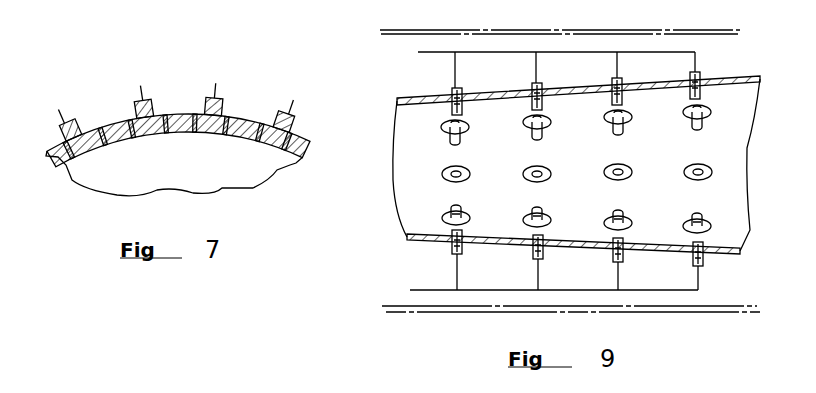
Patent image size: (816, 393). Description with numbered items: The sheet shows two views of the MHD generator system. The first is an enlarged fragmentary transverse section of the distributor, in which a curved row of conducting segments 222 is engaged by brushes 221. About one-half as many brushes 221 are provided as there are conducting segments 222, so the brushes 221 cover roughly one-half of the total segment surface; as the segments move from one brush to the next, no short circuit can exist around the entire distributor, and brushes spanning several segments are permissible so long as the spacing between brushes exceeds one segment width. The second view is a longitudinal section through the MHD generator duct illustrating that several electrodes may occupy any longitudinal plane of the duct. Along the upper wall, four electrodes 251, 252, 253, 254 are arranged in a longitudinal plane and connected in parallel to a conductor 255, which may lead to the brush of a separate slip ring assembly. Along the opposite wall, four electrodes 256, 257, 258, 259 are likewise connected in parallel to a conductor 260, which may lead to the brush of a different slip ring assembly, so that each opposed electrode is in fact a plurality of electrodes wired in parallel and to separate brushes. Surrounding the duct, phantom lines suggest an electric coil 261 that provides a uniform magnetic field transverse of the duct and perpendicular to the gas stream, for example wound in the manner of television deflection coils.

In FIG. 7, the brushes 221 is at (135, 103).
In FIG. 7, the conducting segments 222 is at (177, 140).
In FIG. 9, the electrode 251 is at (452, 92).
In FIG. 9, the electrode 252 is at (532, 86).
In FIG. 9, the electrode 253 is at (612, 80).
In FIG. 9, the electrode 254 is at (690, 74).
In FIG. 9, the conductor 255 is at (418, 52).
In FIG. 9, the electrode 256 is at (452, 248).
In FIG. 9, the electrode 257 is at (533, 250).
In FIG. 9, the electrode 258 is at (613, 253).
In FIG. 9, the electrode 259 is at (693, 256).
In FIG. 9, the conductor 260 is at (410, 290).
In FIG. 9, the electric coil 261 is at (620, 313).